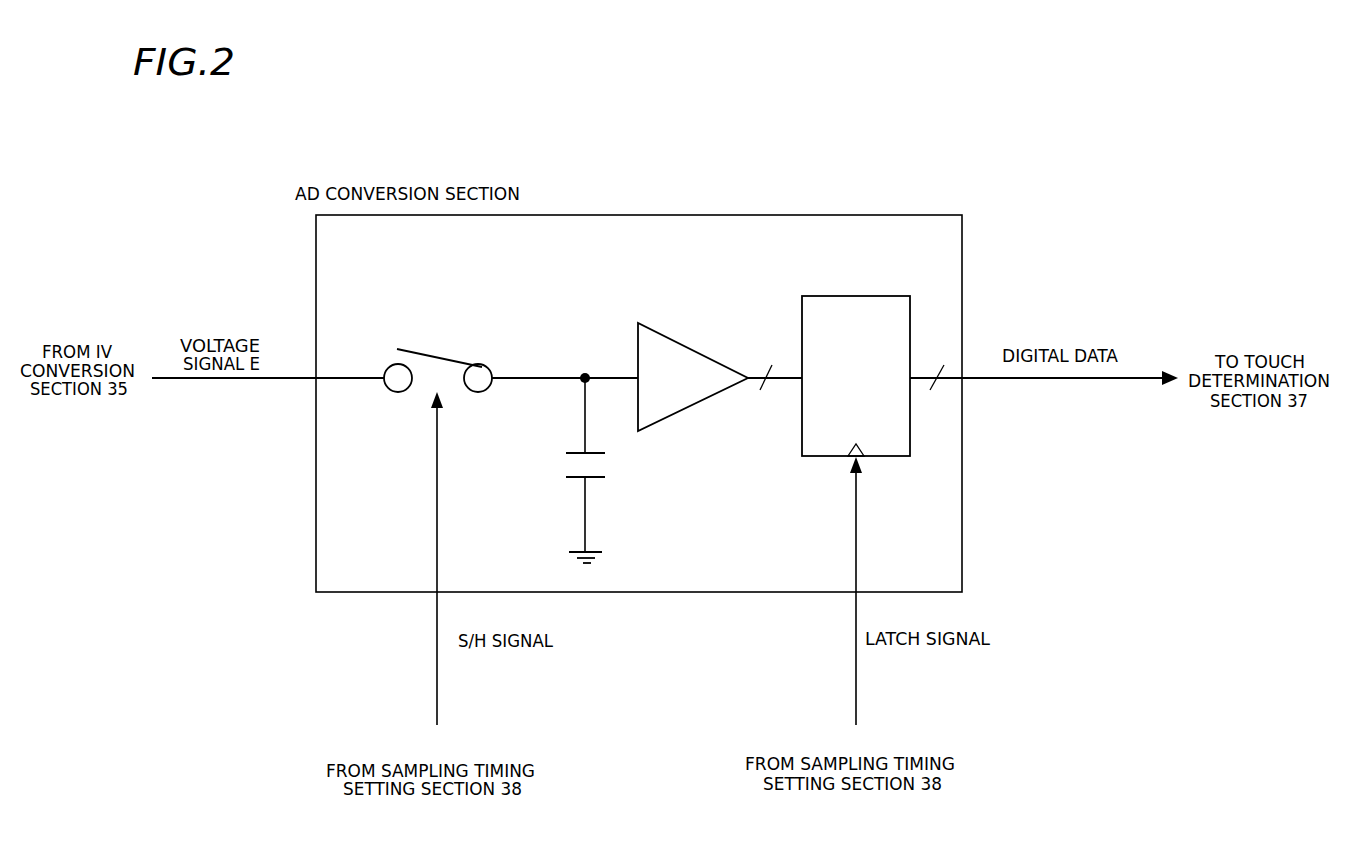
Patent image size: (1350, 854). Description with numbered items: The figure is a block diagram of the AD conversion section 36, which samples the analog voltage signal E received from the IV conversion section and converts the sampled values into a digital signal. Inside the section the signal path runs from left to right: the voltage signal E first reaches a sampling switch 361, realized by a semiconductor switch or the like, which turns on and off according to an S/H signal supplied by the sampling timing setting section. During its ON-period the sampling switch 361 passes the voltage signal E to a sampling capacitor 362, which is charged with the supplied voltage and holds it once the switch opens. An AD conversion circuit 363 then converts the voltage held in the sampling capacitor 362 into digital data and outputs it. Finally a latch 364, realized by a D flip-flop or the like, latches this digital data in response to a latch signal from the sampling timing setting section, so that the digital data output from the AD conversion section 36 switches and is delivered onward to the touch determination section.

The AD conversion section 36 is at (715, 215).
The sampling switch 361 is at (453, 343).
The sampling capacitor 362 is at (572, 451).
The AD conversion circuit 363 is at (682, 342).
The latch 364 is at (858, 296).